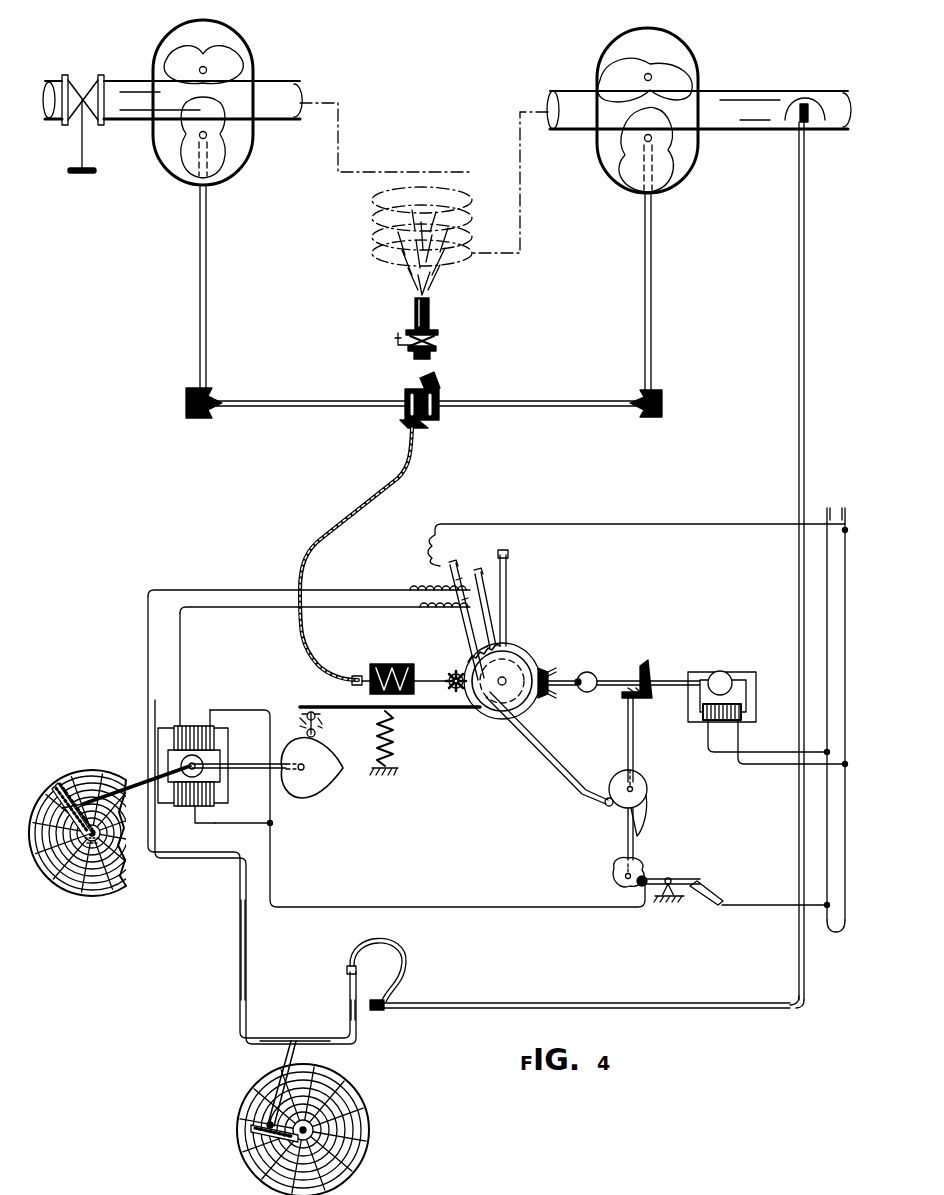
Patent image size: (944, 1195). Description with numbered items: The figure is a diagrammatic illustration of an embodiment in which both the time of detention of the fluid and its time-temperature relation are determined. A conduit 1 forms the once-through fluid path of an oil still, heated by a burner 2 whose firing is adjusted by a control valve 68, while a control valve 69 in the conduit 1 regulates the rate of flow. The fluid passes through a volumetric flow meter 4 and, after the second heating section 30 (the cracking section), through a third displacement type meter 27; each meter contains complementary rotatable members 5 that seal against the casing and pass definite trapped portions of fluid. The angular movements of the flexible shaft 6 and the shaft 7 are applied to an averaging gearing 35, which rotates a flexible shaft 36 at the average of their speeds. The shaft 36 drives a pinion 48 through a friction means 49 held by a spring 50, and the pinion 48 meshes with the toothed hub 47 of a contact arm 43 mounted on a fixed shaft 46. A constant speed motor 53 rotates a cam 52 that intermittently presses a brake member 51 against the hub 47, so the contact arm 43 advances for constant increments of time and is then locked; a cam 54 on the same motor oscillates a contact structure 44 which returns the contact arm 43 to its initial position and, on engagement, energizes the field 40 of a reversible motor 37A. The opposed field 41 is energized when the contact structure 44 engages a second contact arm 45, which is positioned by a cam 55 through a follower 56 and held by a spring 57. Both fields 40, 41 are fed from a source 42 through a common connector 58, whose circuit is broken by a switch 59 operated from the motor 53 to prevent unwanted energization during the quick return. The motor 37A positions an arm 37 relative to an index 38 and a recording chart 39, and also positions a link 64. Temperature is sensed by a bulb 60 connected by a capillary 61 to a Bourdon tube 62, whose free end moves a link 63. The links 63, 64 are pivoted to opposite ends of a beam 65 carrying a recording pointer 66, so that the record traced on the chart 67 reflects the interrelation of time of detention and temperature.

The conduit 1 is at (132, 122).
The burner 2 is at (428, 318).
The volumetric flow meter 4 is at (250, 162).
The rotatable members 5 is at (184, 135).
The flexible shaft 6 is at (206, 262).
The shaft 7 is at (651, 285).
The third displacement type meter 27 is at (680, 182).
The second heating section 30 is at (424, 199).
The averaging gearing 35 is at (436, 378).
The flexible shaft 36 is at (406, 478).
The arm 37 is at (138, 772).
The reversible motor 37A is at (228, 752).
The index 38 is at (60, 789).
The recording chart 39 is at (86, 772).
The field 40 is at (196, 726).
The field 41 is at (194, 808).
The source 42 is at (829, 731).
The contact arm 43 is at (518, 566).
The contact structure 44 is at (450, 578).
The contact arm 45 is at (490, 586).
The fixed shaft 46 is at (506, 686).
The toothed hub 47 is at (470, 662).
The pinion 48 is at (452, 666).
The friction means 49 is at (385, 662).
The spring 50 is at (366, 694).
The brake member 51 is at (550, 652).
The cam 52 is at (580, 670).
The constant speed motor 53 is at (706, 670).
The cam 54 is at (647, 790).
The cam 55 is at (326, 790).
The follower 56 is at (316, 733).
The spring 57 is at (392, 738).
The common connector 58 is at (470, 907).
The switch 59 is at (705, 886).
The bulb 60 is at (818, 128).
The capillary 61 is at (799, 395).
The Bourdon tube 62 is at (404, 952).
The link 63 is at (346, 994).
The link 64 is at (236, 962).
The beam 65 is at (316, 1036).
The recording pointer 66 is at (276, 1050).
The chart 67 is at (360, 1090).
The control valve 68 is at (392, 348).
The control valve 69 is at (96, 176).